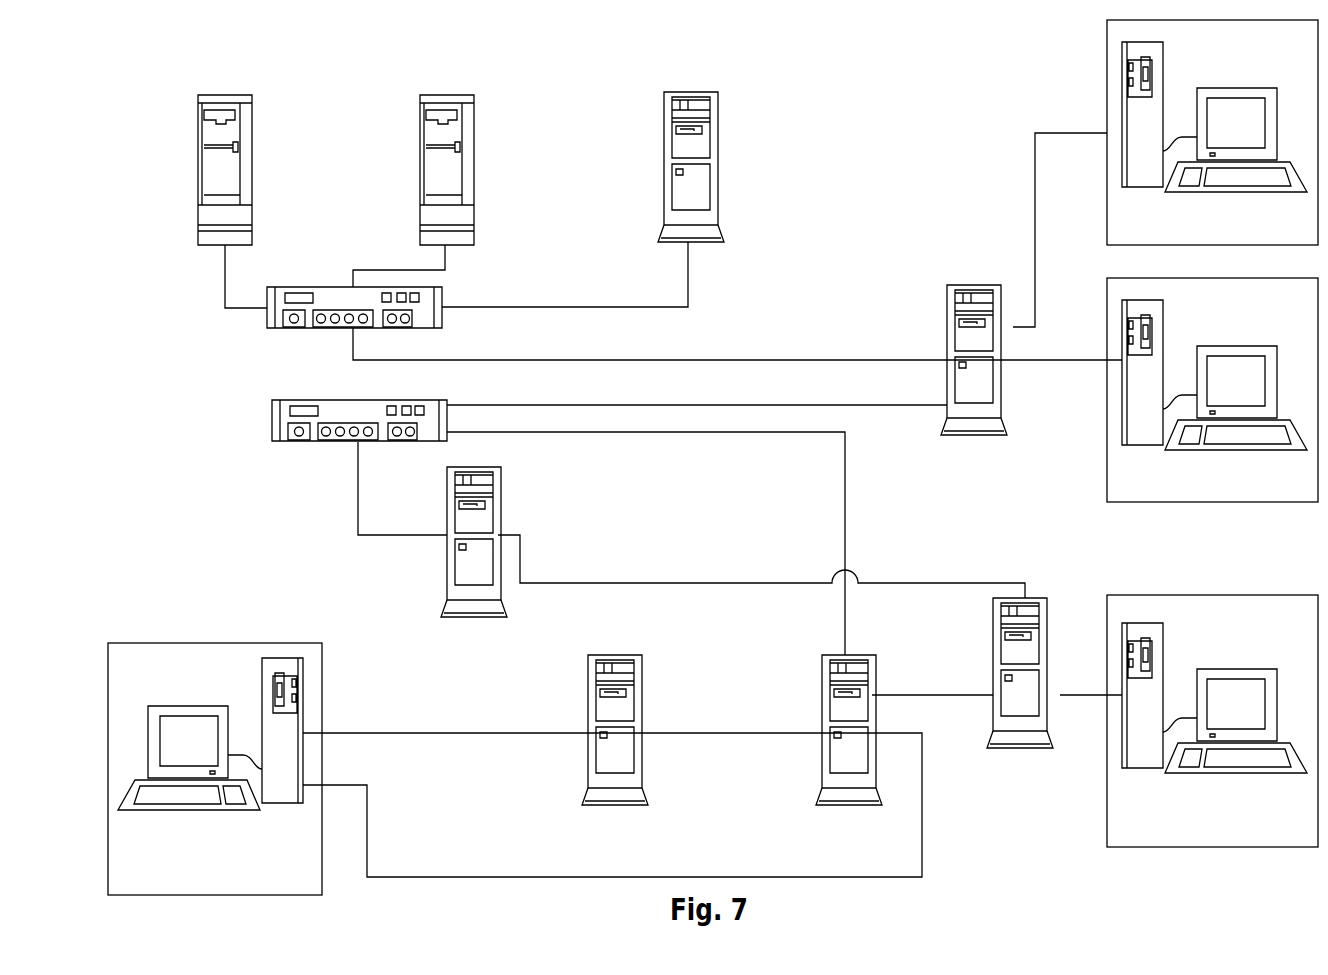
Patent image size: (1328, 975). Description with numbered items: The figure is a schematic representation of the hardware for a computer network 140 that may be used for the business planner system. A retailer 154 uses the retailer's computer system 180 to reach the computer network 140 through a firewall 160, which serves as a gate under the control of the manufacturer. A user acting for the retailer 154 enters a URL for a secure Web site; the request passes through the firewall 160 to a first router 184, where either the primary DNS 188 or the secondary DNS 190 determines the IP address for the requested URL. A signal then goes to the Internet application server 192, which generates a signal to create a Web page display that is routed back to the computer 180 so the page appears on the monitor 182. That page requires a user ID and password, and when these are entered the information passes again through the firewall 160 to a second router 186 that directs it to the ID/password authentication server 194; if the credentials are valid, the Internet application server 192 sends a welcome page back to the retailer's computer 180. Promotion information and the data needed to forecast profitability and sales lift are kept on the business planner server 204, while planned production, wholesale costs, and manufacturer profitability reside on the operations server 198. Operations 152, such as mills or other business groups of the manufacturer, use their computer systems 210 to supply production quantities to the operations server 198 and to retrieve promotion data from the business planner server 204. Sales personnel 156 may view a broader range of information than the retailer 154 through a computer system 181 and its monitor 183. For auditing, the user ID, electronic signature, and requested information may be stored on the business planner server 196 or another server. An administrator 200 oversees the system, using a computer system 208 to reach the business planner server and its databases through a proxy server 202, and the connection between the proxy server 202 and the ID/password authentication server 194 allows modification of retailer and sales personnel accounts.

The computer network 140 is at (157, 100).
The operations 152 is at (235, 640).
The retailer 154 is at (1120, 475).
The sales personnel 156 is at (1115, 217).
The firewall 160 is at (968, 285).
The retailer's computer system 180 is at (1163, 315).
The sales personnel computer system 181 is at (1163, 55).
The monitor 182 is at (1232, 345).
The monitor 183 is at (1232, 87).
The first router 184 is at (267, 314).
The second router 186 is at (272, 422).
The primary DNS 188 is at (200, 170).
The secondary DNS 190 is at (418, 170).
The Internet application server 192 is at (663, 165).
The ID/password authentication server 194 is at (498, 498).
The business planner server 196 is at (848, 498).
The operations server 198 is at (642, 707).
The administrator 200 is at (1163, 595).
The proxy server 202 is at (993, 672).
The business planner server 204 is at (820, 700).
The administrator computer system 208 is at (1163, 647).
The operations computer system 210 is at (263, 683).